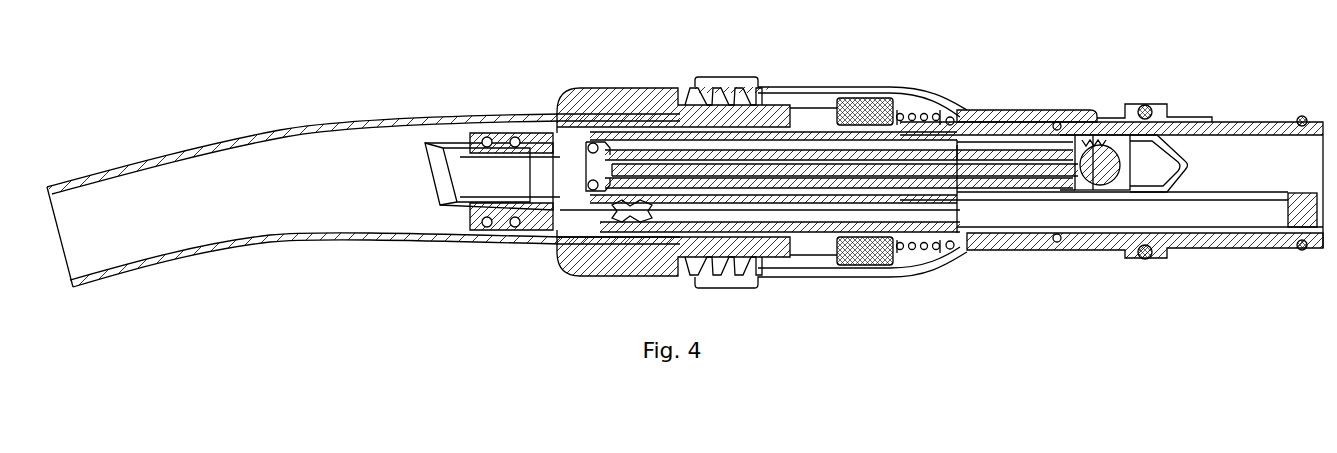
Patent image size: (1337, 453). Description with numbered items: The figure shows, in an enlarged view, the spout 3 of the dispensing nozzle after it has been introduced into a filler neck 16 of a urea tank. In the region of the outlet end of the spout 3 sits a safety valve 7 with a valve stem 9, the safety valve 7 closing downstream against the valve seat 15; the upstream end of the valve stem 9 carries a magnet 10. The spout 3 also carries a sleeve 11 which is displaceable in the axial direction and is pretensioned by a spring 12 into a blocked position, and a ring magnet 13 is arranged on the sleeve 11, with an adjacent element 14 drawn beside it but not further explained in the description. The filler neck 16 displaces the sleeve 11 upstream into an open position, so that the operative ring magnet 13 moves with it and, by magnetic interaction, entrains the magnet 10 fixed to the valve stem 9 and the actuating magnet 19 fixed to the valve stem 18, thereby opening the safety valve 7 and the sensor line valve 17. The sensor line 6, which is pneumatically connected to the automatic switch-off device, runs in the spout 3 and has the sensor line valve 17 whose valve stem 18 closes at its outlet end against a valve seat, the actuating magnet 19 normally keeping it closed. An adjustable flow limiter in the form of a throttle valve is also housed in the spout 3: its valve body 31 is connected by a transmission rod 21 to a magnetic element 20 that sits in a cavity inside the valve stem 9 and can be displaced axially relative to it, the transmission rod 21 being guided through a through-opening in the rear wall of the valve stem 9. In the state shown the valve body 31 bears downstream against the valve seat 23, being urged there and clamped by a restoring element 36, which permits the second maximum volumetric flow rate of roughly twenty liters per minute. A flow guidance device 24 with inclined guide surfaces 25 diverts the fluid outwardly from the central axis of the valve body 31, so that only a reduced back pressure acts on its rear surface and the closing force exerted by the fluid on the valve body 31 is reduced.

The spout 3 is at (1002, 138).
The sensor line 6 is at (1050, 205).
The safety valve 7 is at (576, 128).
The valve stem 9 is at (690, 150).
The magnet 10 is at (830, 118).
The sleeve 11 is at (905, 247).
The spring 12 is at (943, 247).
The ring magnet 13 is at (866, 250).
The outer sleeve 14 is at (860, 90).
The valve seat 15 is at (548, 150).
The filler neck 16 is at (470, 242).
The sensor line valve 17 is at (620, 213).
The valve stem 18 is at (680, 215).
The actuating magnet 19 is at (832, 252).
The magnetic element 20 is at (620, 135).
The transmission rod 21 is at (979, 150).
The valve seat 23 is at (1082, 142).
The flow guidance device 24 is at (1181, 150).
The guide surfaces 25 is at (1210, 180).
The valve body 31 is at (1097, 142).
The restoring element 36 is at (750, 160).